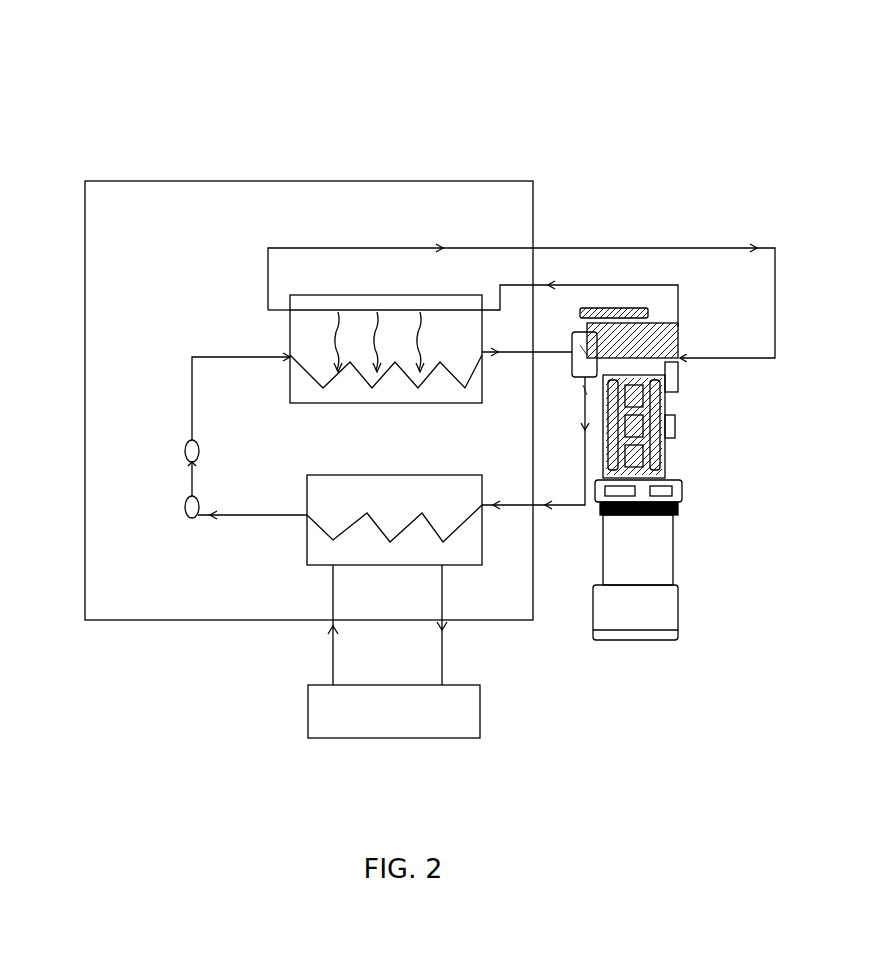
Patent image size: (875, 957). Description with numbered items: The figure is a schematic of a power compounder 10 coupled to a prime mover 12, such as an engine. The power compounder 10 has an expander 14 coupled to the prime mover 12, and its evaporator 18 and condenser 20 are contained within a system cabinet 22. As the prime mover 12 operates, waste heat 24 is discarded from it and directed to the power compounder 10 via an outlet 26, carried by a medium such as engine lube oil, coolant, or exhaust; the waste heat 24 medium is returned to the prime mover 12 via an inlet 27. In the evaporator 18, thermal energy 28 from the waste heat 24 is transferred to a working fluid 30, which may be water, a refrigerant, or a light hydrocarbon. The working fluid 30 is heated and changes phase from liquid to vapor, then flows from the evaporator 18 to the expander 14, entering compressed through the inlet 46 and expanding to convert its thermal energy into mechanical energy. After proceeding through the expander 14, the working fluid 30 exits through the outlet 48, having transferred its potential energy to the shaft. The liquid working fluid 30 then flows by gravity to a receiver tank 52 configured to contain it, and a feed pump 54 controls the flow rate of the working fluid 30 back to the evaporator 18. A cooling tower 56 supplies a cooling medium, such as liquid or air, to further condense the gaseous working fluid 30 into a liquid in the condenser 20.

The power compounder 10 is at (559, 78).
The prime mover 12 is at (711, 454).
The expander 14 is at (587, 355).
The evaporator 18 is at (386, 297).
The condenser 20 is at (394, 520).
The system cabinet 22 is at (309, 400).
The waste heat 24 is at (600, 283).
The outlet 26 is at (680, 332).
The inlet 27 is at (680, 363).
The thermal energy 28 is at (377, 330).
The working fluid 30 is at (262, 357).
The inlet 46 is at (570, 352).
The outlet 48 is at (585, 392).
The receiver tank 52 is at (187, 516).
The feed pump 54 is at (182, 446).
The cooling tower 56 is at (394, 651).